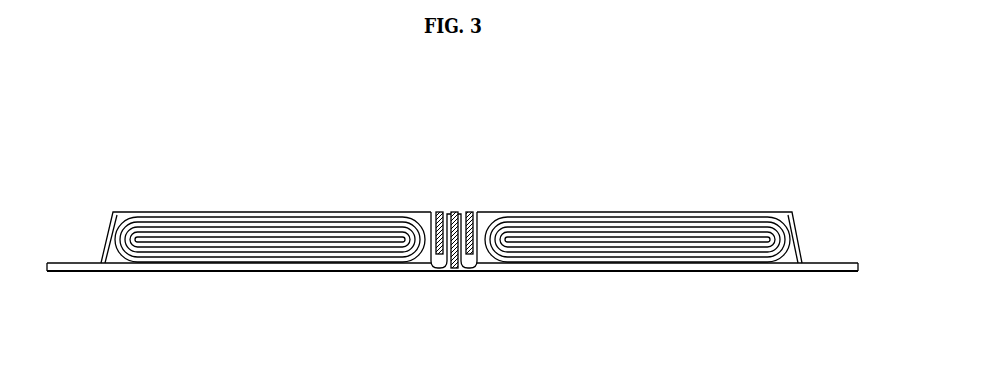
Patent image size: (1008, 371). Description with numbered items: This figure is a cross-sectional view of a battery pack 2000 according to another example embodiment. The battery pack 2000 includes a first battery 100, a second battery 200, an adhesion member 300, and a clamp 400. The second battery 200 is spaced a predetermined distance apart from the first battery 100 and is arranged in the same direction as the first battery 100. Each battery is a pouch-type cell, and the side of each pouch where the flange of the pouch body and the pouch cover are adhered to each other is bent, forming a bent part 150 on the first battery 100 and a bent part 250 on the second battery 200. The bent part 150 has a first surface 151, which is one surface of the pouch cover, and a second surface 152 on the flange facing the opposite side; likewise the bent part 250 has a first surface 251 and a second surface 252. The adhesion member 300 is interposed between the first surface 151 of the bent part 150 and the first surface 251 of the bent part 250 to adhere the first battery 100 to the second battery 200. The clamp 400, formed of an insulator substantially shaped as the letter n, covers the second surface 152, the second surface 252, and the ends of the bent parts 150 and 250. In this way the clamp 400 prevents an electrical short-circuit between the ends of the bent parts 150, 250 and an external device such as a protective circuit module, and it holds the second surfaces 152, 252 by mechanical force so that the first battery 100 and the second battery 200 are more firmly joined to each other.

The battery pack 2000 is at (98, 120).
The first battery 100 is at (643, 199).
The second battery 200 is at (271, 199).
The bent part 150 is at (505, 160).
The first surface 151 is at (442, 212).
The second surface 152 is at (483, 213).
The bent part 250 is at (443, 323).
The first surface 251 is at (452, 269).
The second surface 252 is at (412, 264).
The adhesion member 300 is at (462, 272).
The clamp 400 is at (436, 212).